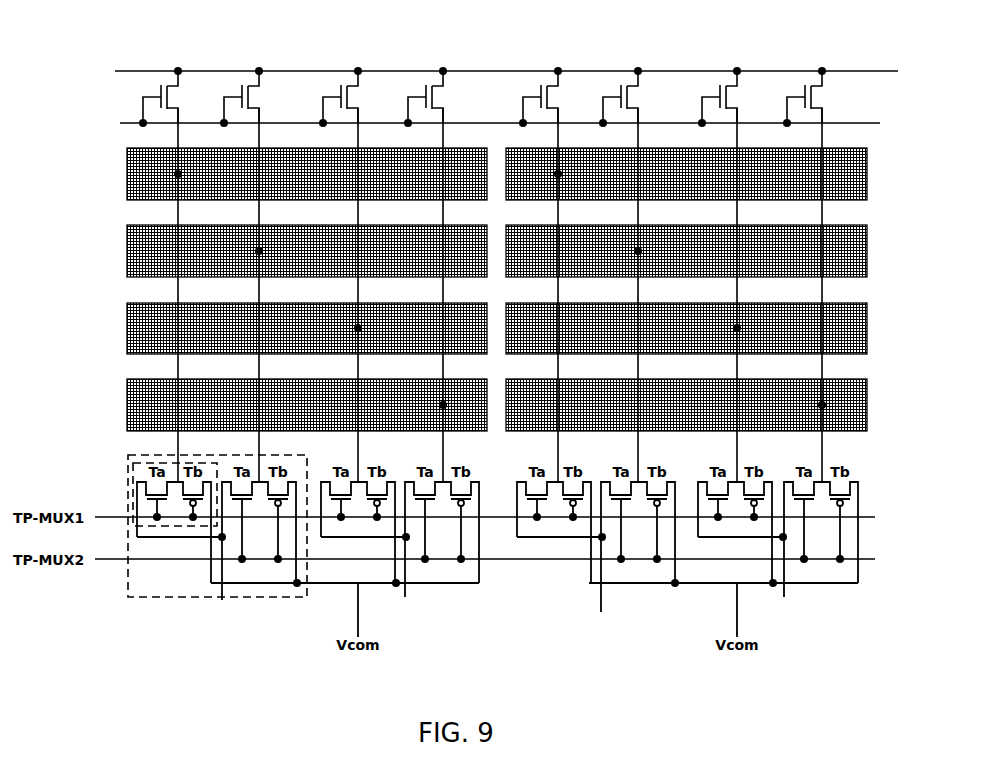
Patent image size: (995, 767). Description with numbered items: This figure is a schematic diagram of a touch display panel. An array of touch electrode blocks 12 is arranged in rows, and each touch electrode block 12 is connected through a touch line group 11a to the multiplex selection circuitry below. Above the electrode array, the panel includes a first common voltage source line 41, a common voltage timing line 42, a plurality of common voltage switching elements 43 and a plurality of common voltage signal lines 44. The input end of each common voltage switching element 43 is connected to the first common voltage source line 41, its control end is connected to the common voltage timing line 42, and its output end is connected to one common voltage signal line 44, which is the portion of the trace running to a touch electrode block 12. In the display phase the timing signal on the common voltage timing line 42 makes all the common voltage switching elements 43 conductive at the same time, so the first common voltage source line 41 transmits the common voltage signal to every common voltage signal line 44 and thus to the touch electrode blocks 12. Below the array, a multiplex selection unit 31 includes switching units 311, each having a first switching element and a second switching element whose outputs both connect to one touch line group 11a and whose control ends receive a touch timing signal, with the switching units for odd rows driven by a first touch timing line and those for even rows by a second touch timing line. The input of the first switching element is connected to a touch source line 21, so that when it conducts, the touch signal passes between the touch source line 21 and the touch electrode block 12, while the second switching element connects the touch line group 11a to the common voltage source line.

The first common voltage source line 41 is at (115, 71).
The common voltage timing line 42 is at (120, 123).
The common voltage switching element 43 is at (338, 87).
The common voltage signal line 44 is at (822, 135).
The touch electrode block 12 is at (140, 173).
The touch line group 11a is at (178, 290).
The multiplex selection unit 31 is at (128, 458).
The switching unit 311 is at (133, 493).
The touch source line 21 is at (788, 637).